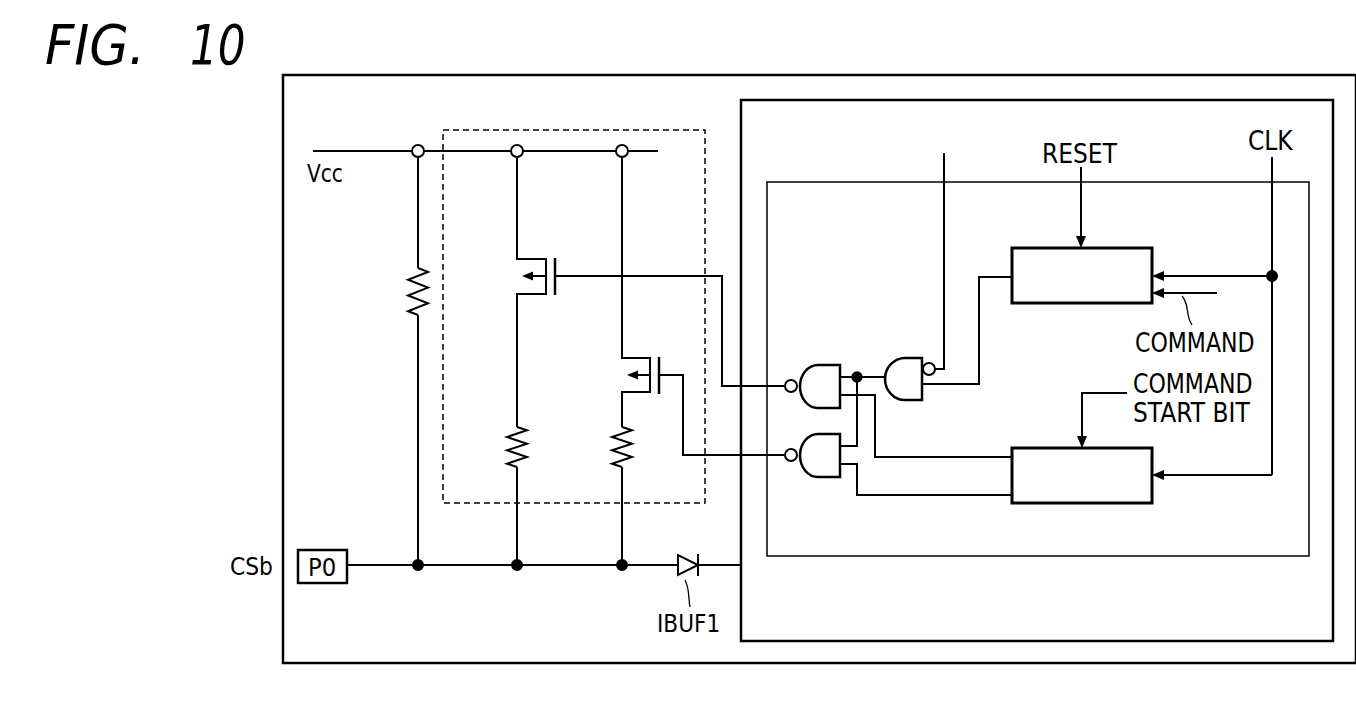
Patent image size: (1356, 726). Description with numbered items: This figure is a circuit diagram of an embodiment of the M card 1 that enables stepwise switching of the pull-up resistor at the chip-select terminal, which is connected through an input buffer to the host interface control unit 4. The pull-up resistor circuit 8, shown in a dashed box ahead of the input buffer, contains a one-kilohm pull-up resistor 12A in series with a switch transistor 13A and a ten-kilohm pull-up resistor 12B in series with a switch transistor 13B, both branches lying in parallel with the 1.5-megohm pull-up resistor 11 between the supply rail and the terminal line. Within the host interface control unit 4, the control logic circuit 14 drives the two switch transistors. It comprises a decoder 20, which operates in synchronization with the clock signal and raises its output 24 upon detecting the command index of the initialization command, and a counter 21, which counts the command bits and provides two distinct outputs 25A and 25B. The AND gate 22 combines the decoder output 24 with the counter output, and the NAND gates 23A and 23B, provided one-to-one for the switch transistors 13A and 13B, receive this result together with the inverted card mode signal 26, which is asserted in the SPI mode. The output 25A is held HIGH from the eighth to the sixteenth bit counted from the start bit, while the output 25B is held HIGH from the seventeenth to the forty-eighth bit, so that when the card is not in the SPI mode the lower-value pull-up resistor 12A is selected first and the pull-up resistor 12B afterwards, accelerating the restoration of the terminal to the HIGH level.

The M card 1 is at (1035, 75).
The host interface control unit 4 is at (741, 137).
The pull-up resistor circuit 8 is at (455, 130).
The pull-up resistor 11 is at (417, 273).
The pull-up resistor 12A is at (513, 468).
The pull-up resistor 12B is at (617, 468).
The switch transistor 13A is at (517, 268).
The switch transistor 13B is at (616, 360).
The control logic circuit 14 is at (875, 557).
The decoder 20 is at (1042, 247).
The counter 21 is at (1043, 447).
The AND gate 22 is at (903, 357).
The NAND gate 23A is at (818, 360).
The NAND gate 23B is at (820, 480).
The output of the decoder 24 is at (982, 342).
The output of the counter 25A is at (922, 457).
The output of the counter 25B is at (922, 496).
The card mode signal 26 is at (943, 223).